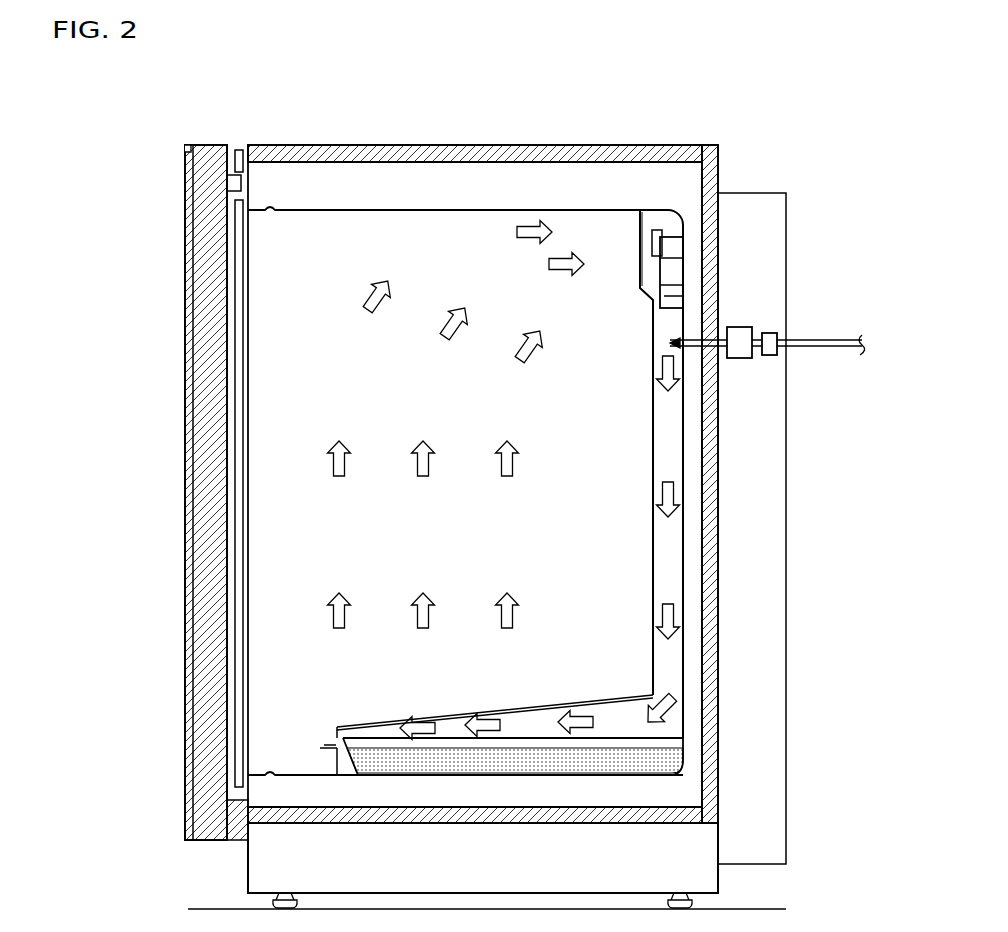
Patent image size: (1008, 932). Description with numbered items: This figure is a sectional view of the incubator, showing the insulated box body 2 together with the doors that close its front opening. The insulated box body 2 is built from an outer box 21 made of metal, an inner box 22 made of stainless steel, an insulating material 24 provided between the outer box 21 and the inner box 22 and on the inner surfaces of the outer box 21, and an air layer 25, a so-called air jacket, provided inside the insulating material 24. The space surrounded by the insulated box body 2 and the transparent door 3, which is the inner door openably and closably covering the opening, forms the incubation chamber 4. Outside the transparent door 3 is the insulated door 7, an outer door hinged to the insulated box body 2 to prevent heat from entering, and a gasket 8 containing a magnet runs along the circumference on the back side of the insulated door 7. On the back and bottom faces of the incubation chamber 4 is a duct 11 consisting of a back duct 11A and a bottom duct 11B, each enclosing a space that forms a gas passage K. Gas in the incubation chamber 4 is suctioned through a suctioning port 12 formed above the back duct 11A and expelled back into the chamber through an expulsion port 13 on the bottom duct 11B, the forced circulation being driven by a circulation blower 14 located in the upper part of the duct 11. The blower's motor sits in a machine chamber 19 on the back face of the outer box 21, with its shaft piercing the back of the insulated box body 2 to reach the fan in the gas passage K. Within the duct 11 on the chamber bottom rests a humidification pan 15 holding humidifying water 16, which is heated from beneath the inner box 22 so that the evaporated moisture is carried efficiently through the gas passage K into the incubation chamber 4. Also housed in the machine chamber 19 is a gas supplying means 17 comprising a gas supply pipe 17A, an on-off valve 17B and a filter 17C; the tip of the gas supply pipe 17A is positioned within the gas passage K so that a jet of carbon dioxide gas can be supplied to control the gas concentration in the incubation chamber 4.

The insulated box body 2 is at (690, 128).
The transparent door 3 is at (238, 675).
The incubation chamber 4 is at (275, 388).
The insulated door 7 is at (210, 500).
The gasket 8 is at (241, 148).
The duct 11 is at (618, 474).
The back duct 11A is at (653, 450).
The bottom duct 11B is at (592, 700).
The suctioning port 12 is at (636, 238).
The expulsion port 13 is at (337, 770).
The circulation blower 14 is at (680, 250).
The humidification pan 15 is at (372, 740).
The humidifying water 16 is at (450, 760).
The gas supplying means 17 is at (712, 356).
The gas supply pipe 17A is at (668, 344).
The on-off valve 17B is at (740, 350).
The filter 17C is at (770, 356).
The machine chamber 19 is at (760, 265).
The outer box 21 is at (303, 147).
The inner box 22 is at (360, 210).
The insulating material 24 is at (425, 153).
The air layer 25 is at (490, 186).
The gas passage K is at (670, 562).